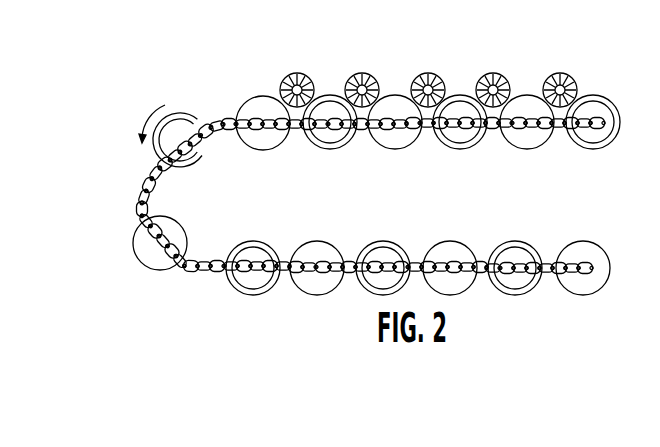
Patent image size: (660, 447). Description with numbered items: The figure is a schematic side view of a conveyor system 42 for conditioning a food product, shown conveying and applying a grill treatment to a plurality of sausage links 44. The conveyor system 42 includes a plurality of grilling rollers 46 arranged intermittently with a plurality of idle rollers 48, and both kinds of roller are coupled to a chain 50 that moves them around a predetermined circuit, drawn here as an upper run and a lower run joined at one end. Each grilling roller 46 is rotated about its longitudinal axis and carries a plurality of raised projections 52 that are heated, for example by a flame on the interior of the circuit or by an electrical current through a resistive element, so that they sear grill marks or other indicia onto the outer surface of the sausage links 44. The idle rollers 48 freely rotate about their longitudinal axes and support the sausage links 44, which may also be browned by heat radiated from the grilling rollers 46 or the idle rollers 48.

The conveyor system 42 is at (600, 195).
The sausage links 44 is at (283, 84).
The grilling roller 46 is at (330, 135).
The idle roller 48 is at (402, 148).
The chain 50 is at (153, 182).
The projections 52 is at (308, 140).